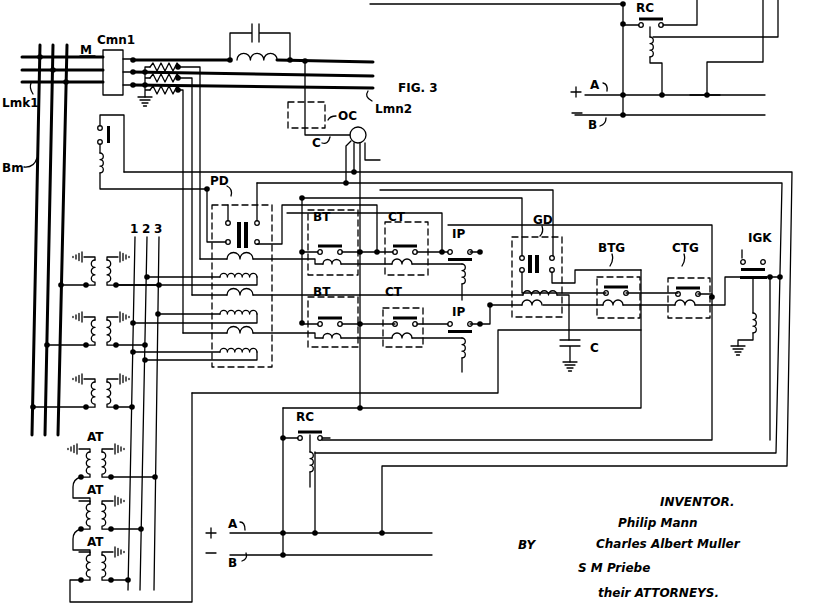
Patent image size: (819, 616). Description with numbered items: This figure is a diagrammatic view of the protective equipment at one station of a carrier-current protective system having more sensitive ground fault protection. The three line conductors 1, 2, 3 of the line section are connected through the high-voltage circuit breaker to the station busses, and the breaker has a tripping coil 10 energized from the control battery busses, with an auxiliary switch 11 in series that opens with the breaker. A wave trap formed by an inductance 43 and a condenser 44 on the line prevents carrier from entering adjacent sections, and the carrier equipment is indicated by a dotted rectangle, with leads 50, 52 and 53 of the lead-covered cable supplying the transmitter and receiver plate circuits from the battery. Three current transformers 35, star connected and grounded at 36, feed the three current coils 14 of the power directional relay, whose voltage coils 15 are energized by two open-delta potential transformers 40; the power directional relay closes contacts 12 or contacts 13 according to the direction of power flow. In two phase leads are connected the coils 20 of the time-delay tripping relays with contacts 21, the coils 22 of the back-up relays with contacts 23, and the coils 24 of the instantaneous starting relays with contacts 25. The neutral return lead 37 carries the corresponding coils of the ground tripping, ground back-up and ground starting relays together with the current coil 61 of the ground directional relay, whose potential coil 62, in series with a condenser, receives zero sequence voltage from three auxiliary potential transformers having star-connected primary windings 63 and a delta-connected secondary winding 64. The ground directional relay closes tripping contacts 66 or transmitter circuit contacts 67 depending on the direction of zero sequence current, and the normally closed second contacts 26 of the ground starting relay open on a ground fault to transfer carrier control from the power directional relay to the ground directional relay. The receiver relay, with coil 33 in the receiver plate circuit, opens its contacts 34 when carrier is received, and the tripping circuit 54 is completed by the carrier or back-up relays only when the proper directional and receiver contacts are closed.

The line conductor 1 is at (54, 233).
The line conductor 2 is at (54, 233).
The line conductor 3 is at (54, 233).
The tripping coil 10 is at (96, 157).
The auxiliary switch 11 is at (96, 132).
The contacts of power directional relay 12 is at (224, 218).
The contacts of power directional relay 13 is at (310, 217).
The current coils 14 is at (252, 261).
The voltage coils 15 is at (220, 277).
The actuating current coil 20 is at (397, 272).
The contacts of current tripping relay 21 is at (413, 242).
The actuating current coil 22 is at (337, 269).
The contacts of back-up relay 23 is at (337, 243).
The actuating current coil 24 is at (465, 271).
The contacts of starting relay 25 is at (468, 252).
The second set of contacts 26 is at (756, 294).
The actuating coil of receiver relay 33 is at (318, 461).
The contacts of receiver relay 34 is at (319, 427).
The current transformers 35 is at (167, 61).
The ground 36 is at (148, 109).
The neutral grounded return lead 37 is at (593, 309).
The potential transformers 40 is at (94, 326).
The inductance 43 is at (261, 48).
The condenser 44 is at (251, 26).
The lead 50 is at (348, 152).
The lead 52 is at (370, 150).
The lead 53 is at (372, 156).
The tripping circuit 54 is at (157, 191).
The current coil of ground directional relay 61 is at (538, 316).
The potential coil of ground directional relay 62 is at (524, 315).
The primary windings 63 is at (73, 484).
The secondary winding 64 is at (75, 467).
The tripping contacts 66 is at (519, 265).
The transmitter circuit contacts 67 is at (554, 263).